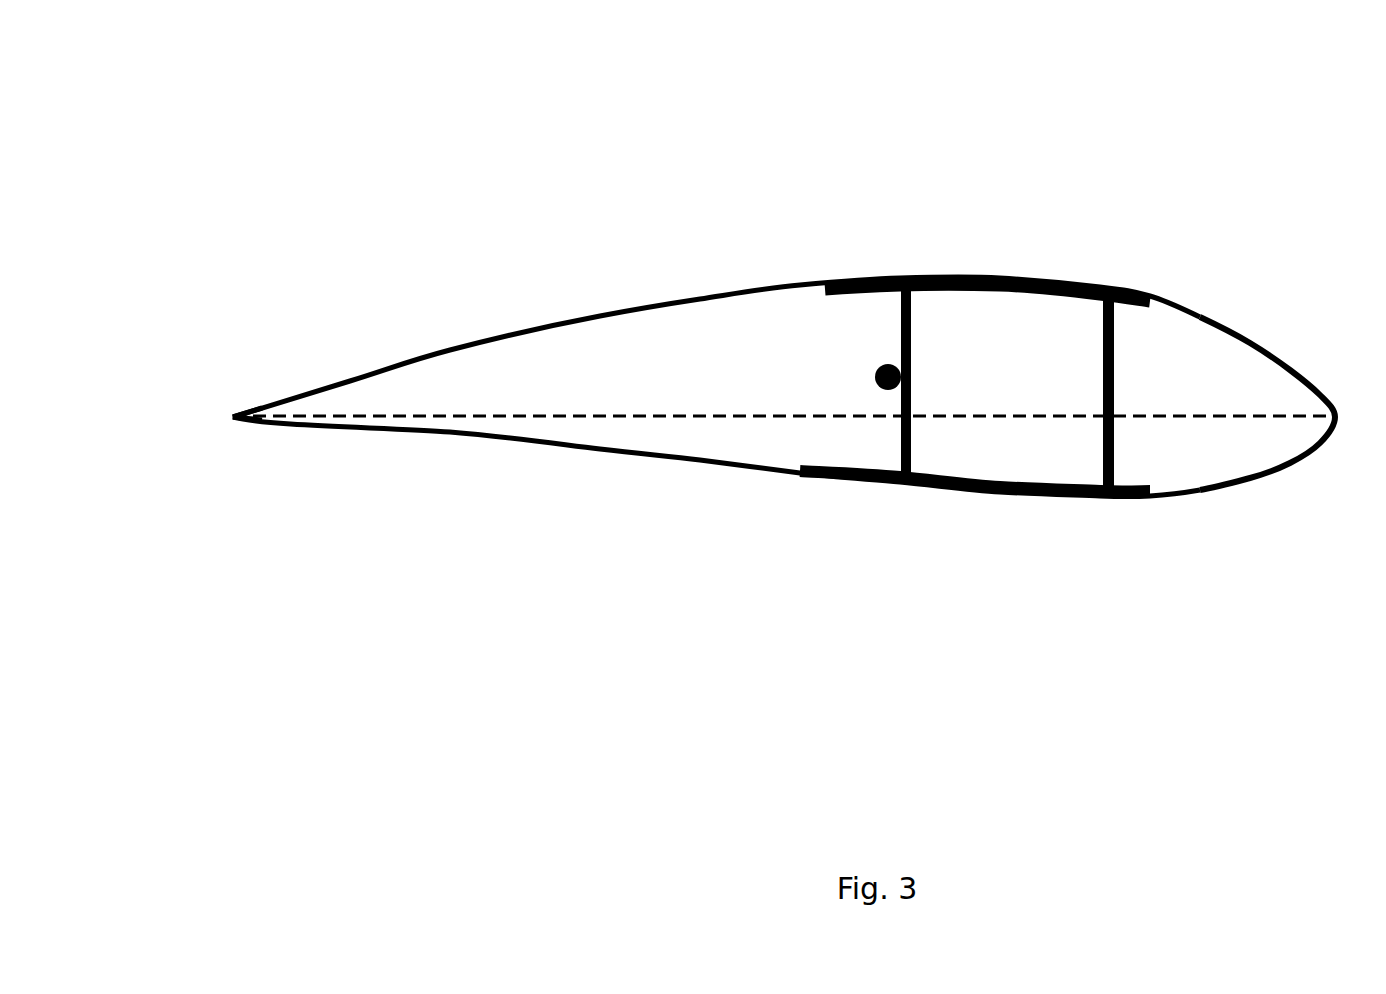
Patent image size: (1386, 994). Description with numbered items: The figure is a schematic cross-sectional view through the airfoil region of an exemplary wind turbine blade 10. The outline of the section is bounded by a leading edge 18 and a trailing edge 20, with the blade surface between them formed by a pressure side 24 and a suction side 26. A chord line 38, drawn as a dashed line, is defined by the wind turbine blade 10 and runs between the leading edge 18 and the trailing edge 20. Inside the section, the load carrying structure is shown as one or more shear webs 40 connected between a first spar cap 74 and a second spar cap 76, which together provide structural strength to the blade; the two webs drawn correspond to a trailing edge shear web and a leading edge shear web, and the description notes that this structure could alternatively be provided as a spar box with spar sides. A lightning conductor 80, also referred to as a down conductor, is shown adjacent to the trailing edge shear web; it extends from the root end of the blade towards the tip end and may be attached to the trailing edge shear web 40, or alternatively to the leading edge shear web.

The wind turbine blade 10 is at (664, 106).
The leading edge 18 is at (1334, 414).
The trailing edge 20 is at (233, 416).
The pressure side 24 is at (1125, 497).
The suction side 26 is at (1148, 295).
The chord line 38 is at (780, 415).
The shear web 40 is at (903, 443).
The first spar cap 74 is at (1019, 494).
The second spar cap 76 is at (1020, 281).
The lightning conductor 80 is at (888, 365).